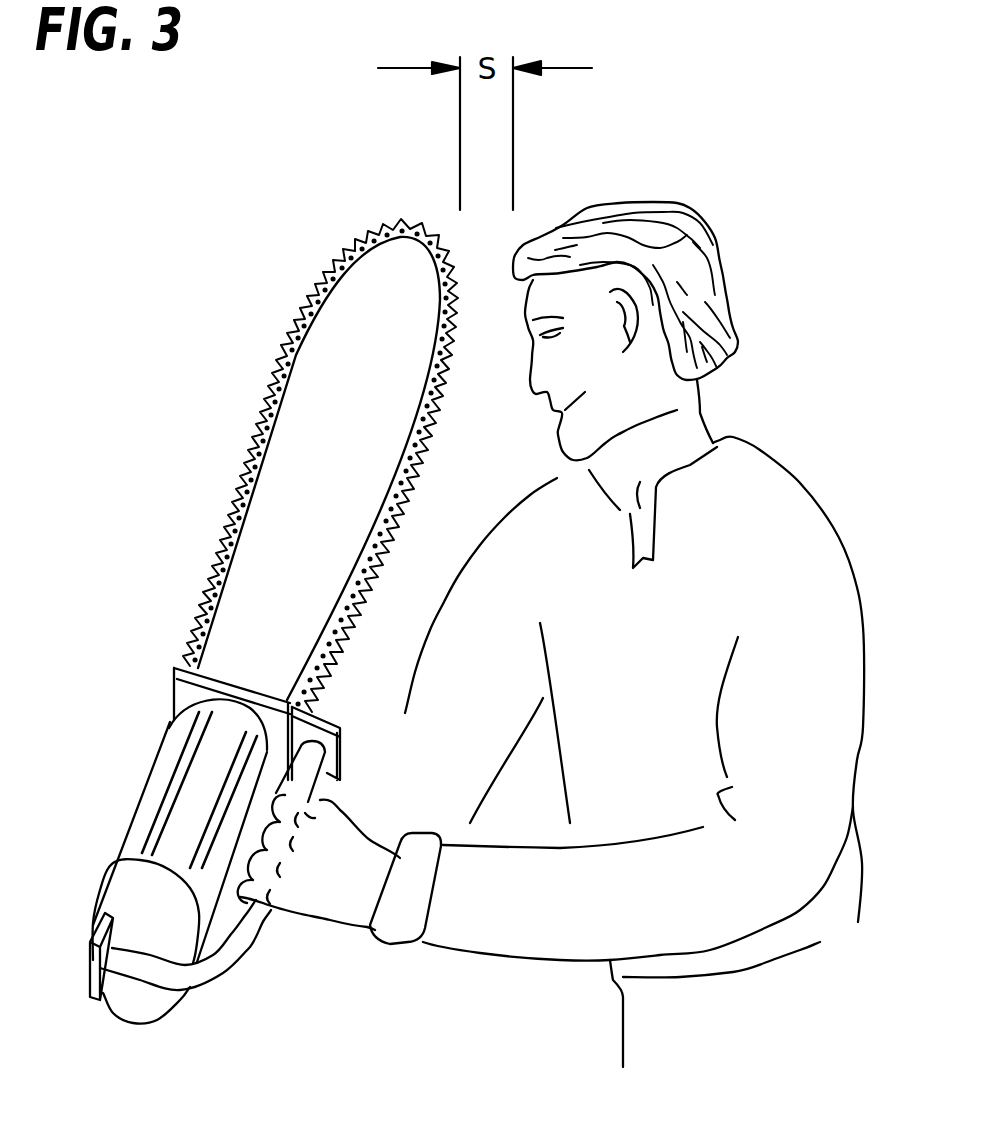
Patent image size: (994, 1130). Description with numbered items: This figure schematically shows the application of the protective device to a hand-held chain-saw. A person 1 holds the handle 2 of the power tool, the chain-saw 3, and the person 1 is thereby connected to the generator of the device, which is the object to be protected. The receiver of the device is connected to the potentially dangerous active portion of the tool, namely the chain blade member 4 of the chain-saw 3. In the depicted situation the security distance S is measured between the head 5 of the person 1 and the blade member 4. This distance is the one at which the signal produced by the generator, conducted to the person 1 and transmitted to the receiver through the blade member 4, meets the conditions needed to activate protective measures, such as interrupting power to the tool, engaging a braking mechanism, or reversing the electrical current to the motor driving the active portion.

The person 1 is at (770, 510).
The handle 2 is at (242, 932).
The power tool (chain-saw) 3 is at (173, 748).
The chain blade member 4 is at (300, 325).
The head 5 is at (664, 212).